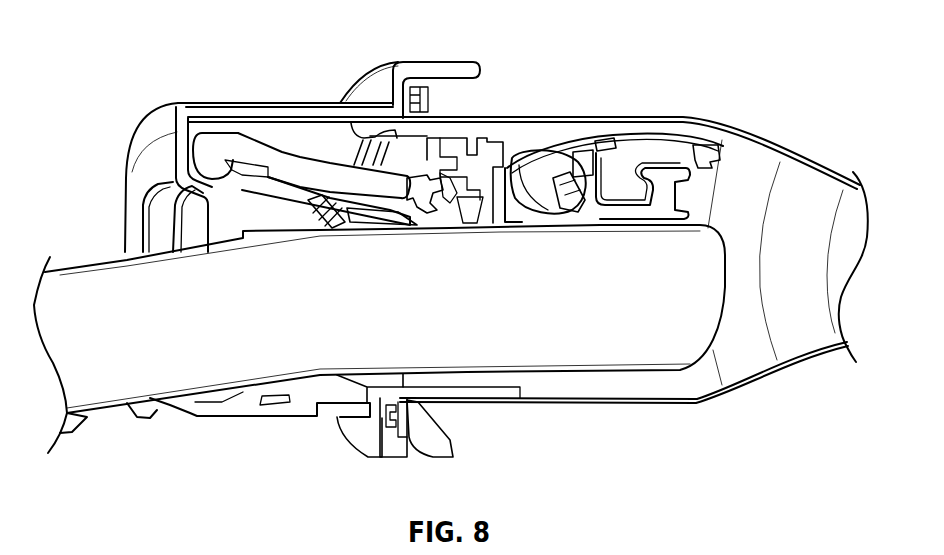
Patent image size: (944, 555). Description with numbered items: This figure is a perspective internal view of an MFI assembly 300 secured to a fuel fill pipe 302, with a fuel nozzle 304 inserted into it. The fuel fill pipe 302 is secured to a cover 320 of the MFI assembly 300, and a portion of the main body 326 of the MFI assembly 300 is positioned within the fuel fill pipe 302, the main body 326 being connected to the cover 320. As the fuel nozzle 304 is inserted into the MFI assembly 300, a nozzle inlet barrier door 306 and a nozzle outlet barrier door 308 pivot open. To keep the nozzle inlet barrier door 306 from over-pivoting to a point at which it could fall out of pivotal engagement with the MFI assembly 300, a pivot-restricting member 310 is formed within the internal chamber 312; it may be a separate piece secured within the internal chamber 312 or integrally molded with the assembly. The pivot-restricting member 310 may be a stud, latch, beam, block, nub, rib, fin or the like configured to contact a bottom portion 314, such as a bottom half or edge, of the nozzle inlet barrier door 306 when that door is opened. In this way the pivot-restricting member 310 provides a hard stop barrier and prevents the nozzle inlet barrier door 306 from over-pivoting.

The MFI assembly 300 is at (263, 103).
The fuel fill pipe 302 is at (752, 138).
The fuel nozzle 304 is at (117, 410).
The nozzle inlet barrier door 306 is at (305, 160).
The nozzle outlet barrier door 308 is at (638, 153).
The pivot-restricting member 310 is at (400, 173).
The internal chamber 312 is at (483, 203).
The bottom portion 314 is at (407, 163).
The cover 320 is at (200, 103).
The main body 326 is at (494, 140).